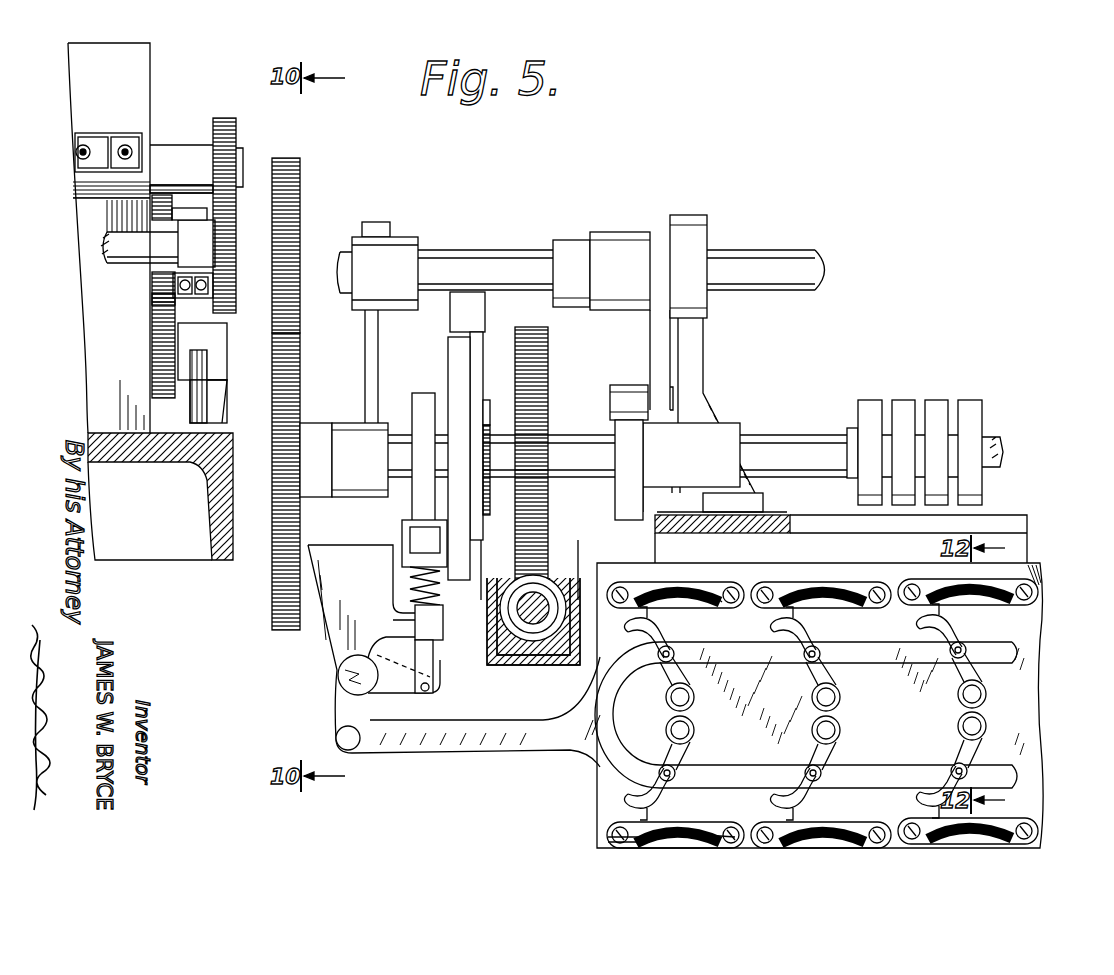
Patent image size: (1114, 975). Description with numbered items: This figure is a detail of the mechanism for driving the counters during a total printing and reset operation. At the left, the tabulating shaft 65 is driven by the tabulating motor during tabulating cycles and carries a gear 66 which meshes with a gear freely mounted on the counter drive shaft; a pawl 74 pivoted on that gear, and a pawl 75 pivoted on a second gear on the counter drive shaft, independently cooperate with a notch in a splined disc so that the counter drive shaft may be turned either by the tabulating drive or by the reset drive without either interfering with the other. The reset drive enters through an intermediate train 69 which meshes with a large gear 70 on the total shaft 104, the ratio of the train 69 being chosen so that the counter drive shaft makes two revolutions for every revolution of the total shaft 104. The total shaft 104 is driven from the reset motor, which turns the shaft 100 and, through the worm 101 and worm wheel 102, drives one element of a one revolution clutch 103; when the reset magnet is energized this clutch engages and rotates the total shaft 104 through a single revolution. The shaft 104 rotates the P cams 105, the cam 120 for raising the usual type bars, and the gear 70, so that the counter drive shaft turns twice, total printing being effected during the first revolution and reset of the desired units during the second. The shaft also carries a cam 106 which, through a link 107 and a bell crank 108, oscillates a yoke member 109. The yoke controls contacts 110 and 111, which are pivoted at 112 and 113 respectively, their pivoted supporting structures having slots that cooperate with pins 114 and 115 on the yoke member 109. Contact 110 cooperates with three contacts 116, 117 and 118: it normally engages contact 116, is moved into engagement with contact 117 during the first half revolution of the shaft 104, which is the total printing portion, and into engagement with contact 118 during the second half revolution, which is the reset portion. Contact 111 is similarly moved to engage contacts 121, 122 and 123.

The tabulating shaft 65 is at (227, 350).
The gear 66 is at (152, 328).
The intermediate train 69 is at (292, 158).
The large gear 70 is at (272, 588).
The pawl 74 is at (152, 300).
The pawl 75 is at (177, 284).
The shaft 100 is at (528, 622).
The worm 101 is at (556, 640).
The worm wheel 102 is at (550, 350).
The one revolution clutch 103 is at (465, 390).
The total shaft 104 is at (583, 452).
The P cams 105 is at (970, 400).
The cam 106 is at (425, 418).
The link 107 is at (433, 658).
The bell crank 108 is at (352, 703).
The yoke member 109 is at (516, 742).
The contact 110 is at (650, 613).
The contact 111 is at (656, 806).
The pivot 112 is at (690, 690).
The pivot 113 is at (690, 735).
The pin 114 is at (674, 660).
The pin 115 is at (676, 775).
The contact 116 is at (648, 586).
The contact 117 is at (688, 586).
The contact 118 is at (722, 590).
The cam 120 is at (628, 426).
The contact 121 is at (610, 840).
The contact 122 is at (628, 830).
The contact 123 is at (716, 830).